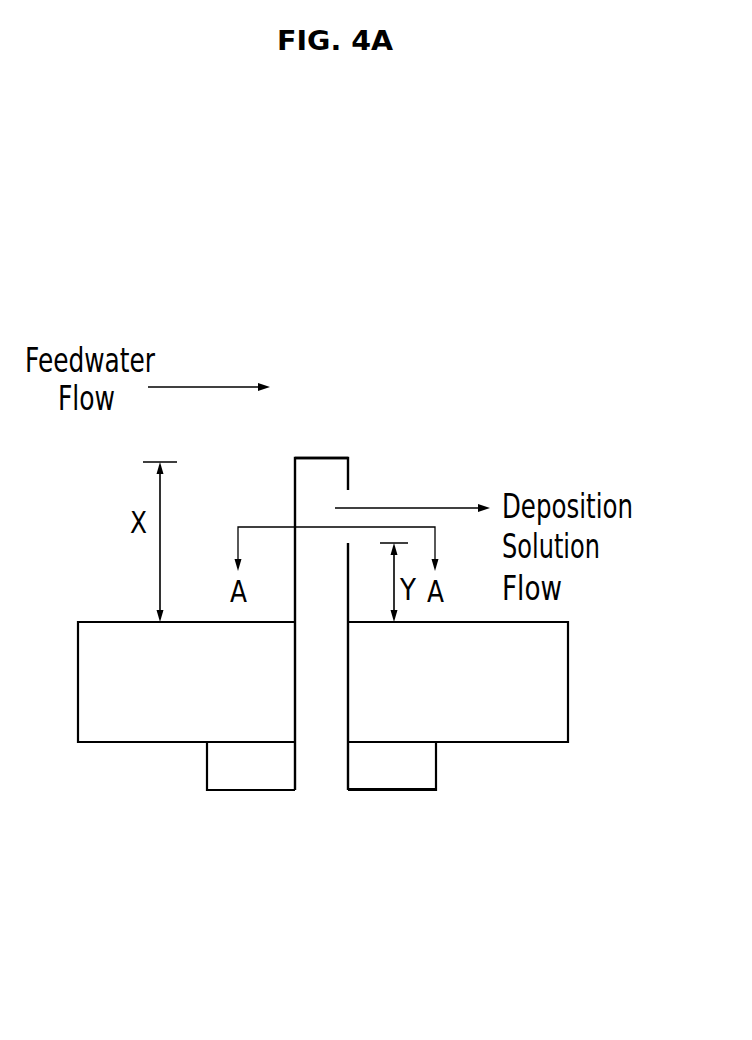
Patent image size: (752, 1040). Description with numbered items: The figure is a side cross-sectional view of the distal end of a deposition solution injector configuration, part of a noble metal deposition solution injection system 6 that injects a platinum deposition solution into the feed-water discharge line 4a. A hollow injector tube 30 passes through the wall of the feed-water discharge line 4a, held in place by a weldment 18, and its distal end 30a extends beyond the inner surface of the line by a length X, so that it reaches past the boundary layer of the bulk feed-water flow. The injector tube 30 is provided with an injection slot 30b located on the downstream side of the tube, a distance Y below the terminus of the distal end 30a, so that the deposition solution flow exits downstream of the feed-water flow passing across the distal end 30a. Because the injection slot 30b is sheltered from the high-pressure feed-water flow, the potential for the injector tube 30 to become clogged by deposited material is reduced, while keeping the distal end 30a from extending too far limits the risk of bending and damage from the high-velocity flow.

The feed-water discharge line 4a is at (568, 695).
The injector tube 30 is at (320, 700).
The weldment 18 is at (410, 789).
The distal end 30a is at (322, 458).
The injection slot 30b is at (372, 492).
The deposition solution injection system 6 is at (346, 426).